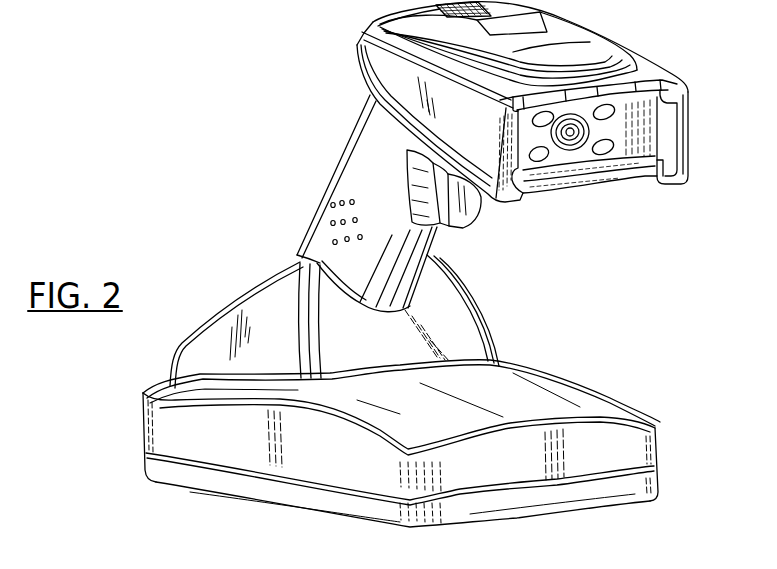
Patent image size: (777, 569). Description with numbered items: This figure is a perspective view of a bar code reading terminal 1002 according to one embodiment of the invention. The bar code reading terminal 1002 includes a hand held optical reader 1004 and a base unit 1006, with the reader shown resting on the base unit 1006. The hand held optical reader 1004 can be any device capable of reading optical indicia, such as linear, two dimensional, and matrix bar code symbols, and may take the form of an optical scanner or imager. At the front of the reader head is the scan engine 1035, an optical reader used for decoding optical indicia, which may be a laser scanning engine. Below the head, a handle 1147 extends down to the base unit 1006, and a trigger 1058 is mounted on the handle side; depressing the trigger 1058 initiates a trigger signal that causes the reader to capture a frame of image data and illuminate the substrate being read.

The bar code reading terminal 1002 is at (201, 128).
The hand held optical reader 1004 is at (370, 50).
The scan engine 1035 is at (580, 155).
The trigger 1058 is at (472, 210).
The handle 1147 is at (352, 183).
The base unit 1006 is at (608, 408).